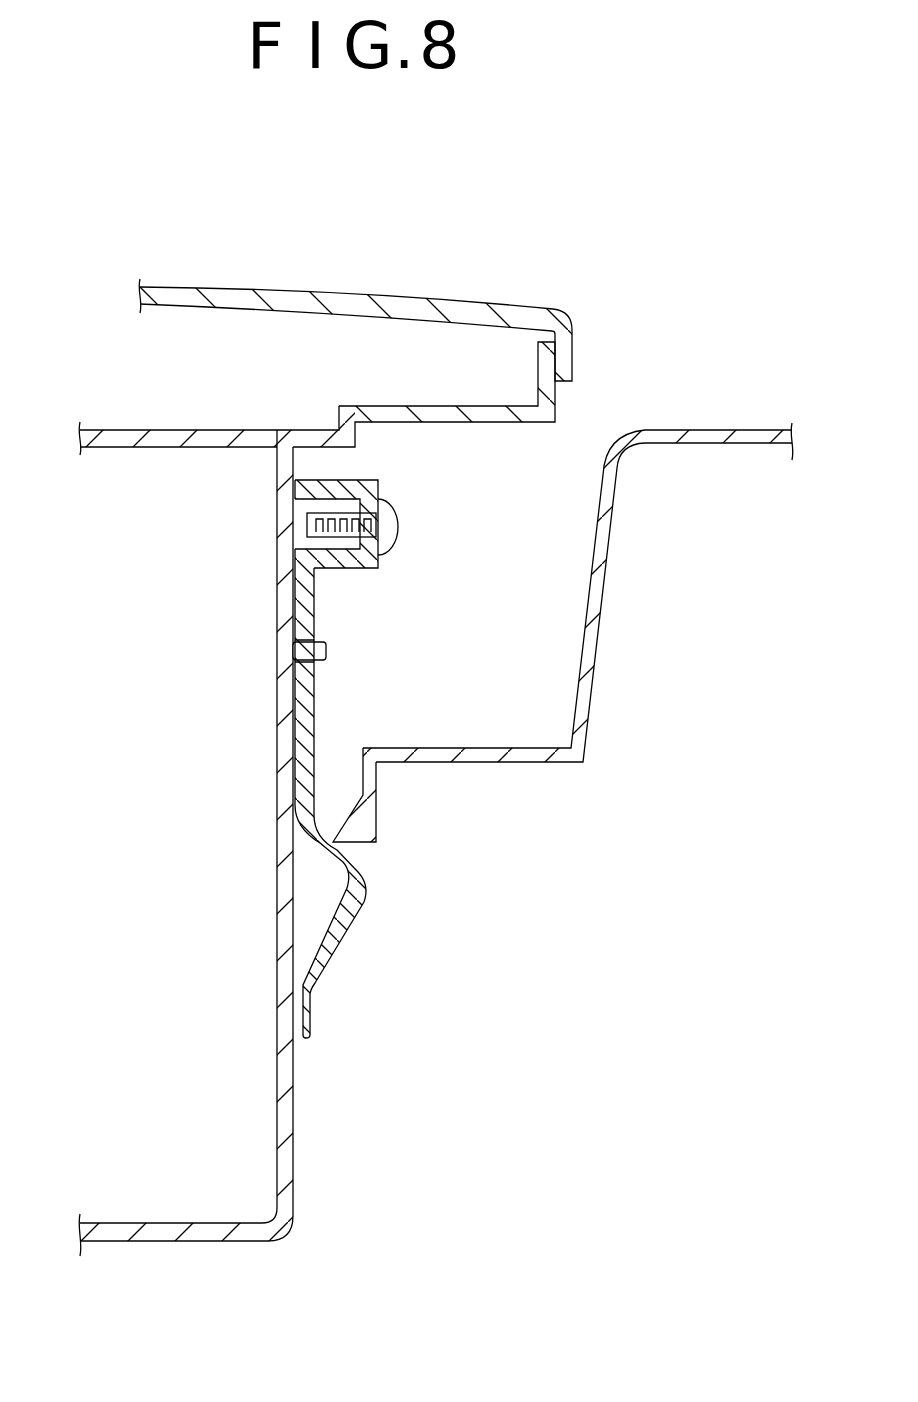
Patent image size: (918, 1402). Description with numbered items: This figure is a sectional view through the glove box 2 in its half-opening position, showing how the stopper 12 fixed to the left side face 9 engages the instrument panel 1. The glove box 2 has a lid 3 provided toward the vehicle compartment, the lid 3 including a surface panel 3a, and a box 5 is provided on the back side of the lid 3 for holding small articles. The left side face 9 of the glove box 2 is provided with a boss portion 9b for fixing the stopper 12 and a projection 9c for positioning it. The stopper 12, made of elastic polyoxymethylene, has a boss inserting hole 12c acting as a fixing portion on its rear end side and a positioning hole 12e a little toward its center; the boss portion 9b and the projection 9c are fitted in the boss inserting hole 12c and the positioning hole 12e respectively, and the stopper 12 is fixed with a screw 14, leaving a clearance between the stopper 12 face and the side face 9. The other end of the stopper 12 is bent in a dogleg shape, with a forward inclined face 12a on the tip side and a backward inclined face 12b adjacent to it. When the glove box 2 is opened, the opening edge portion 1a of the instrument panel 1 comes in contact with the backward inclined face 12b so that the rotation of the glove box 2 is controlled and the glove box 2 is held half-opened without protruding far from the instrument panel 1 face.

The instrument panel 1 is at (703, 420).
The opening edge portion 1a is at (372, 812).
The glove box 2 is at (460, 282).
The lid 3 is at (222, 288).
The surface panel 3a is at (327, 312).
The box 5 is at (147, 1223).
The left side face 9 is at (291, 946).
The boss portion 9b is at (305, 523).
The projection 9c is at (323, 651).
The stopper 12 is at (314, 720).
The forward inclined face 12a is at (334, 968).
The backward inclined face 12b is at (335, 858).
The boss inserting hole 12c is at (340, 478).
The positioning hole 12e is at (292, 660).
The screw 14 is at (398, 532).